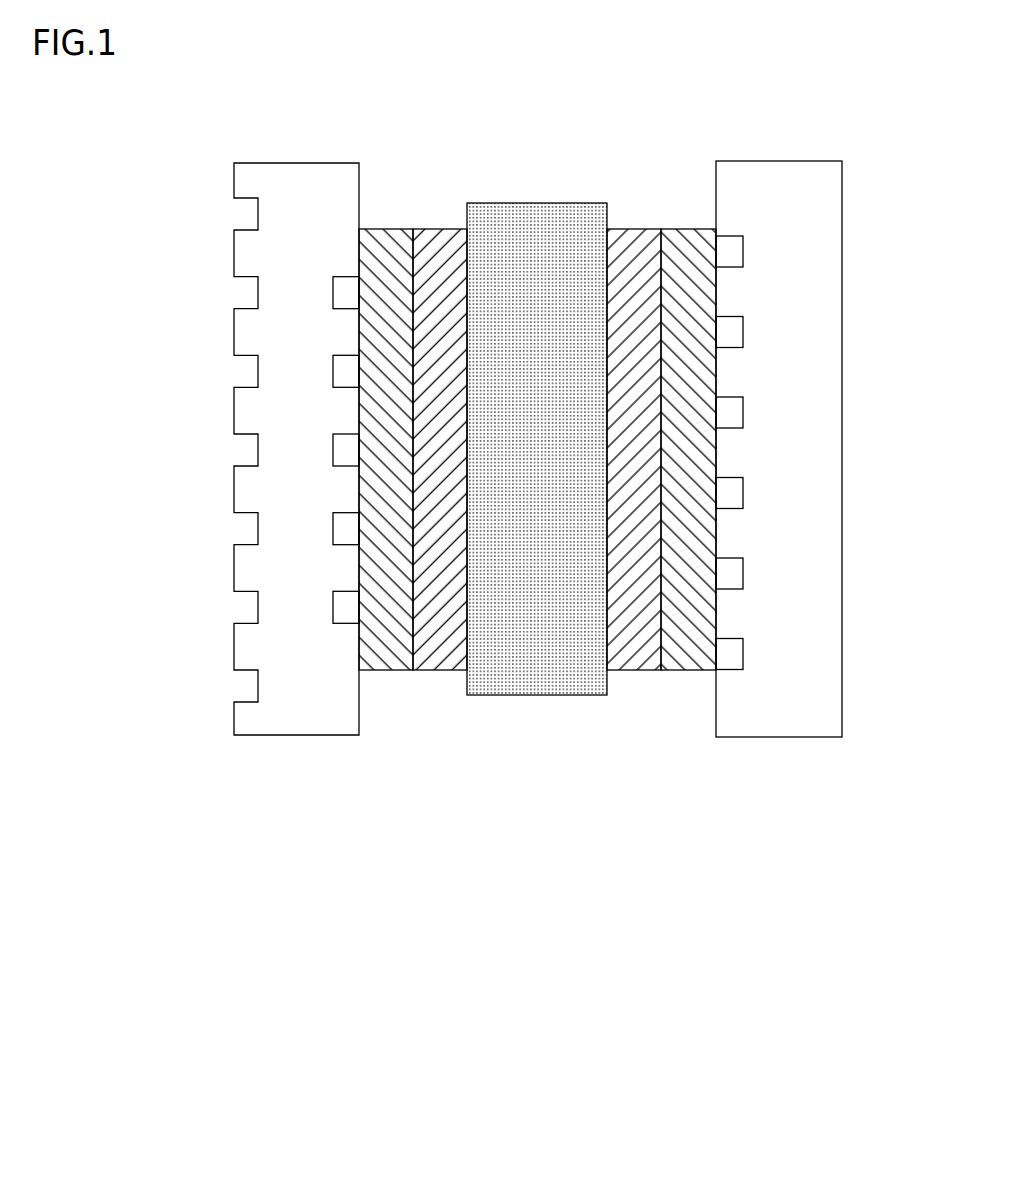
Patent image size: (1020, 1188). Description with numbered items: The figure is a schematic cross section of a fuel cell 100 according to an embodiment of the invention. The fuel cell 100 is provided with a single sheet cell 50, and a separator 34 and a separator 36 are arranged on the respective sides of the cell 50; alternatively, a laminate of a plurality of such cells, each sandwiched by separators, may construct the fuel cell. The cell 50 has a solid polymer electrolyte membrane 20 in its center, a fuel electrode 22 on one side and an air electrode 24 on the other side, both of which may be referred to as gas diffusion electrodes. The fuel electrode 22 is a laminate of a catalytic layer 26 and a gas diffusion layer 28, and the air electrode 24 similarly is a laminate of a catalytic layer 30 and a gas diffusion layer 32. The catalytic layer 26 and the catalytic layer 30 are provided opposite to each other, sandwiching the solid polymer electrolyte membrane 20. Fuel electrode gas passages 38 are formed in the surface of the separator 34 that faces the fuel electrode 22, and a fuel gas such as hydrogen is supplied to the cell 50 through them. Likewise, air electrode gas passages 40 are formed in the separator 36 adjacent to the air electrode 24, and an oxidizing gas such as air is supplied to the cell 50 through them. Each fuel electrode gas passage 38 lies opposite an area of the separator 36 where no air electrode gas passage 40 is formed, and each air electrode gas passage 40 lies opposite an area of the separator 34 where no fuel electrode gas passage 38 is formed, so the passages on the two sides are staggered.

The fuel cell 100 is at (533, 581).
The solid polymer electrolyte membrane 20 is at (540, 690).
The fuel electrode 22 is at (406, 564).
The air electrode 24 is at (672, 560).
The catalytic layer 26 is at (447, 633).
The gas diffusion layer 28 is at (392, 638).
The catalytic layer 30 is at (635, 630).
The gas diffusion layer 32 is at (687, 632).
The separator 34 is at (253, 457).
The separator 36 is at (817, 449).
The fuel electrode gas passages 38 is at (348, 608).
The air electrode gas passages 40 is at (732, 643).
The cell 50 is at (542, 579).